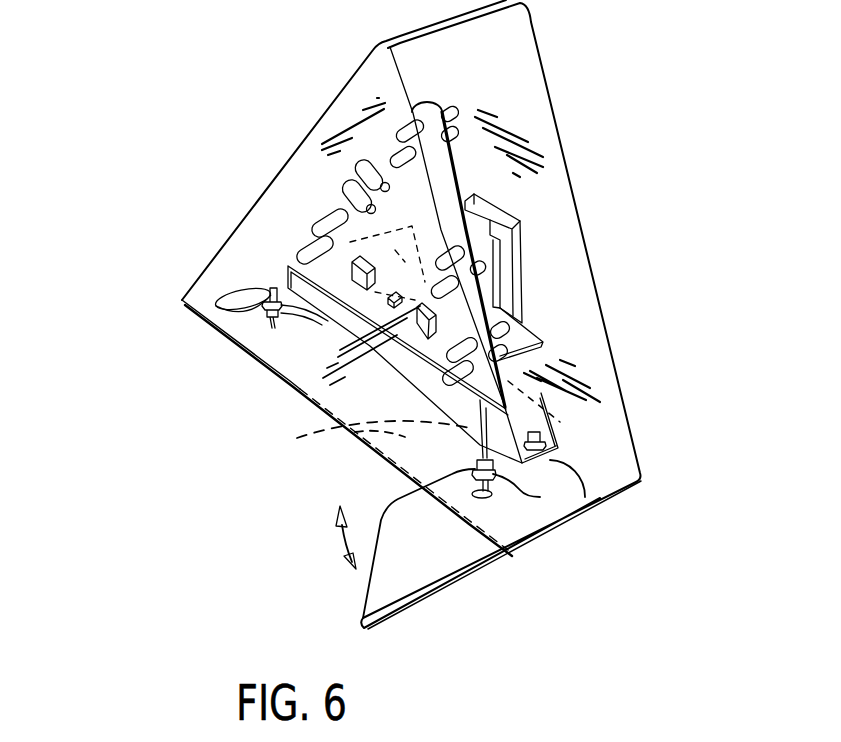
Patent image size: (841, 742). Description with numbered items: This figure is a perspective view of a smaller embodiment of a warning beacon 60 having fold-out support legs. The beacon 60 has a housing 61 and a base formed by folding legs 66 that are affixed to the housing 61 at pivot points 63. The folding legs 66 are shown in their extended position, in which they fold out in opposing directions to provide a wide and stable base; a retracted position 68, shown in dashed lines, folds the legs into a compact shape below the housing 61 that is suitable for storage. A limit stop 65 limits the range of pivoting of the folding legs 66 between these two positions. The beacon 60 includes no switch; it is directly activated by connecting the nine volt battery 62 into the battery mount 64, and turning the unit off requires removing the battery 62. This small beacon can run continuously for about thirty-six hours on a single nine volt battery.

The warning beacon 60 is at (186, 136).
The housing 61 is at (253, 217).
The 9 volt battery 62 is at (515, 267).
The pivot points 63 is at (540, 497).
The battery mount 64 is at (522, 345).
The limit stop 65 is at (271, 328).
The folding legs 66 is at (273, 278).
The retracted position 68 is at (360, 340).